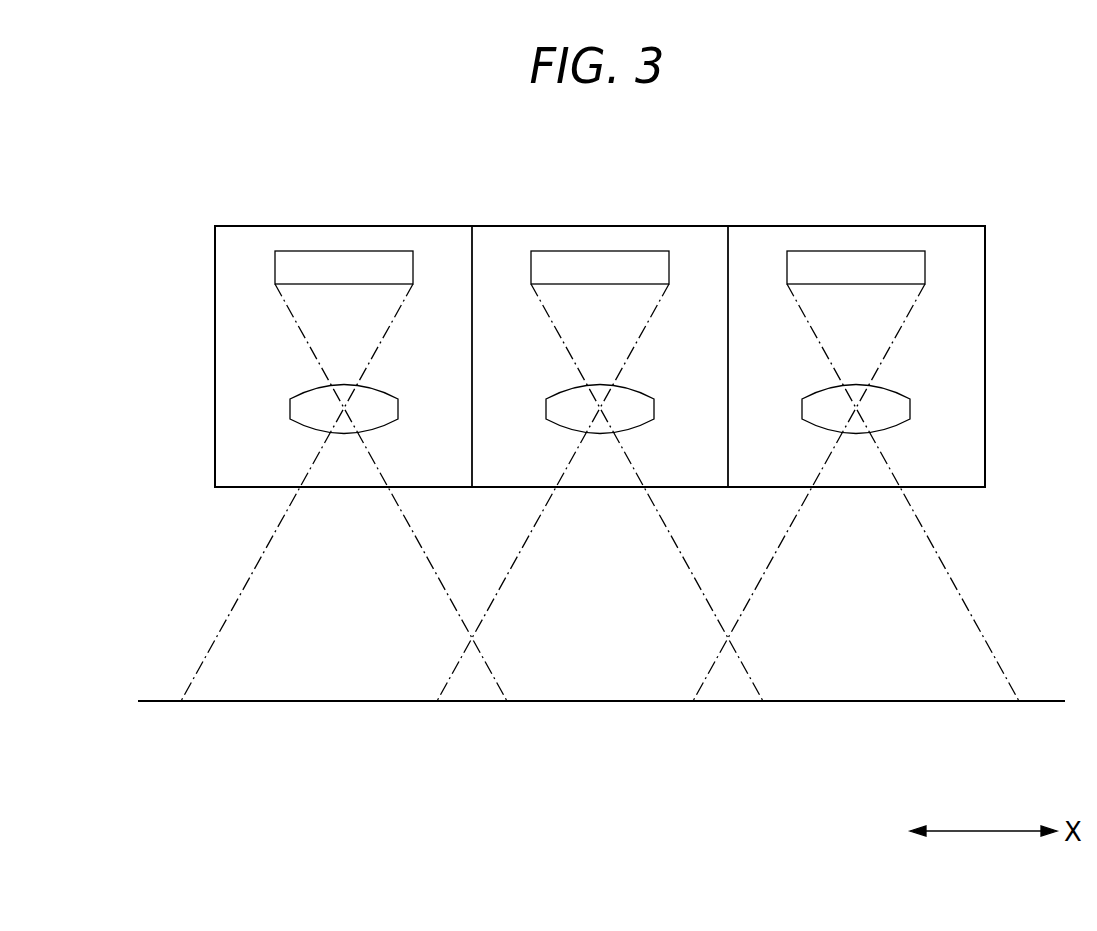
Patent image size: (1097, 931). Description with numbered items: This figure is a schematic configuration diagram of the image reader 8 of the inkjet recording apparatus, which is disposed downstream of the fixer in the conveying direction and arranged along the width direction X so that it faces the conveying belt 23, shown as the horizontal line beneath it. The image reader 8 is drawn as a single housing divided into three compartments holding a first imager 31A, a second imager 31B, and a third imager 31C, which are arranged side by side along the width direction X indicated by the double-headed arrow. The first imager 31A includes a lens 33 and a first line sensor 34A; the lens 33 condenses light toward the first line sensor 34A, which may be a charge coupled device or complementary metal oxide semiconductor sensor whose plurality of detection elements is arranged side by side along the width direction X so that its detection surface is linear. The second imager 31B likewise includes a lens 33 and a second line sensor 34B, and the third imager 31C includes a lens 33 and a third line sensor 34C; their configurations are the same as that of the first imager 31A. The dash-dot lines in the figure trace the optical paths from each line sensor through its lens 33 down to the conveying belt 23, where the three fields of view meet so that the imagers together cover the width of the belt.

The image reader 8 is at (985, 350).
The first imager 31A is at (215, 330).
The second imager 31B is at (529, 226).
The third imager 31C is at (787, 226).
The first line sensor 34A is at (345, 258).
The second line sensor 34B is at (600, 258).
The third line sensor 34C is at (856, 258).
The lens 33 is at (390, 392).
The conveying belt 23 is at (652, 702).